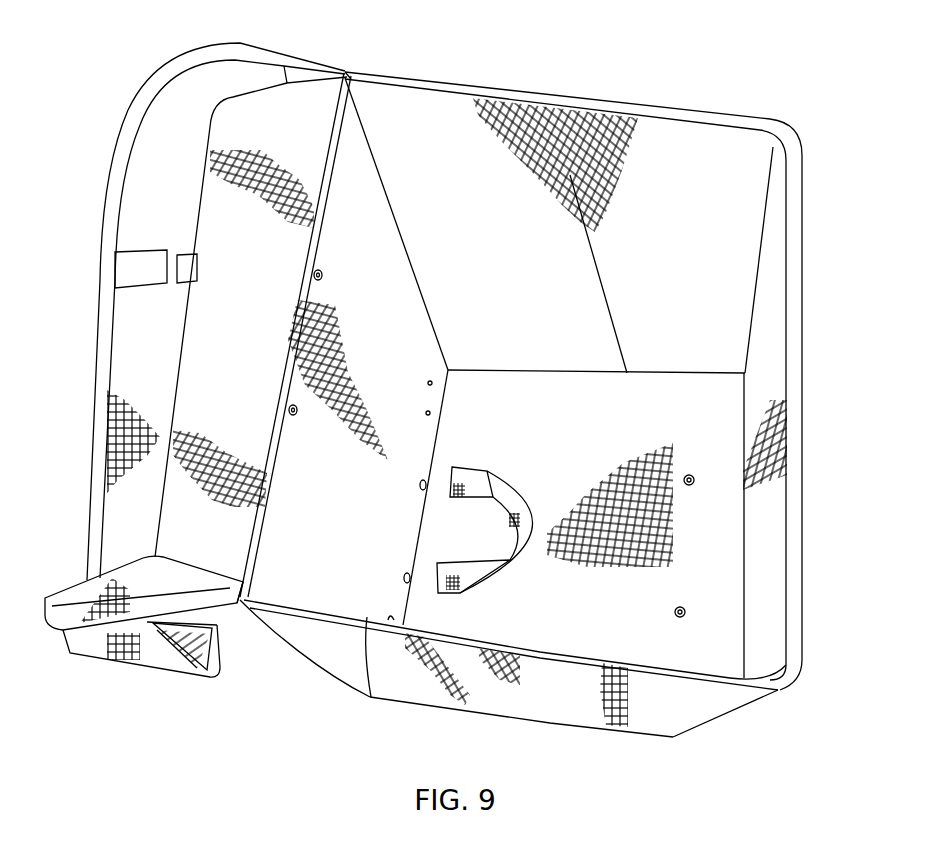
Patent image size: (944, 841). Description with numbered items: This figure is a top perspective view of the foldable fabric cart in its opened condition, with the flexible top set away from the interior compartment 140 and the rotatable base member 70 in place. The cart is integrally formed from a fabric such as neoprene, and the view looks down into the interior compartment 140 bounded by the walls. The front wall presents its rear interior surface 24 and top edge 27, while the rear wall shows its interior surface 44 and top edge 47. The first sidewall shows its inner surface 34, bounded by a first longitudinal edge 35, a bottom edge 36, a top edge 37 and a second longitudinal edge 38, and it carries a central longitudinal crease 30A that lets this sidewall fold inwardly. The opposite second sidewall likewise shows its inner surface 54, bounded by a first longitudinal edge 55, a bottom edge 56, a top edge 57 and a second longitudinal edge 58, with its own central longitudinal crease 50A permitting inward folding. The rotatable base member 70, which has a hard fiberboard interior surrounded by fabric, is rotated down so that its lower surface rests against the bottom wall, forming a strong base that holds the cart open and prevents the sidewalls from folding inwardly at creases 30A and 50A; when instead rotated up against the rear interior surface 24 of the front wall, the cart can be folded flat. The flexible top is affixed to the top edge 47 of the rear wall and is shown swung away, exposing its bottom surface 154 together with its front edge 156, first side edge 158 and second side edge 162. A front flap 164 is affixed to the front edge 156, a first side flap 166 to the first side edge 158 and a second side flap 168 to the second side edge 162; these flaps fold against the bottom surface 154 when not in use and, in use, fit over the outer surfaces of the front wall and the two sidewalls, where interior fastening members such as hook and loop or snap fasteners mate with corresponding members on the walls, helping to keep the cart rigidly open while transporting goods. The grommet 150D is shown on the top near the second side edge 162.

The rear interior surface 24 is at (746, 410).
The top edge 27 is at (798, 441).
The central longitudinal crease 30A is at (517, 685).
The inner surface 34 is at (740, 673).
The first longitudinal edge 35 is at (745, 704).
The bottom edge 36 is at (623, 735).
The top edge 37 is at (370, 698).
The second longitudinal edge 38 is at (327, 672).
The interior surface 44 is at (378, 538).
The top edge 47 is at (345, 93).
The central longitudinal crease 50A is at (601, 259).
The inner surface 54 is at (450, 112).
The first longitudinal edge 55 is at (770, 132).
The bottom edge 56 is at (556, 374).
The top edge 57 is at (598, 122).
The second longitudinal edge 58 is at (350, 127).
The rotatable base member 70 is at (581, 629).
The interior compartment 140 is at (727, 540).
The grommet 150D is at (313, 262).
The bottom surface 154 is at (229, 298).
The front edge 156 is at (182, 368).
The first side edge 158 is at (241, 620).
The second side edge 162 is at (286, 82).
The front flap 164 is at (135, 167).
The first side flap 166 is at (143, 630).
The second side flap 168 is at (232, 66).